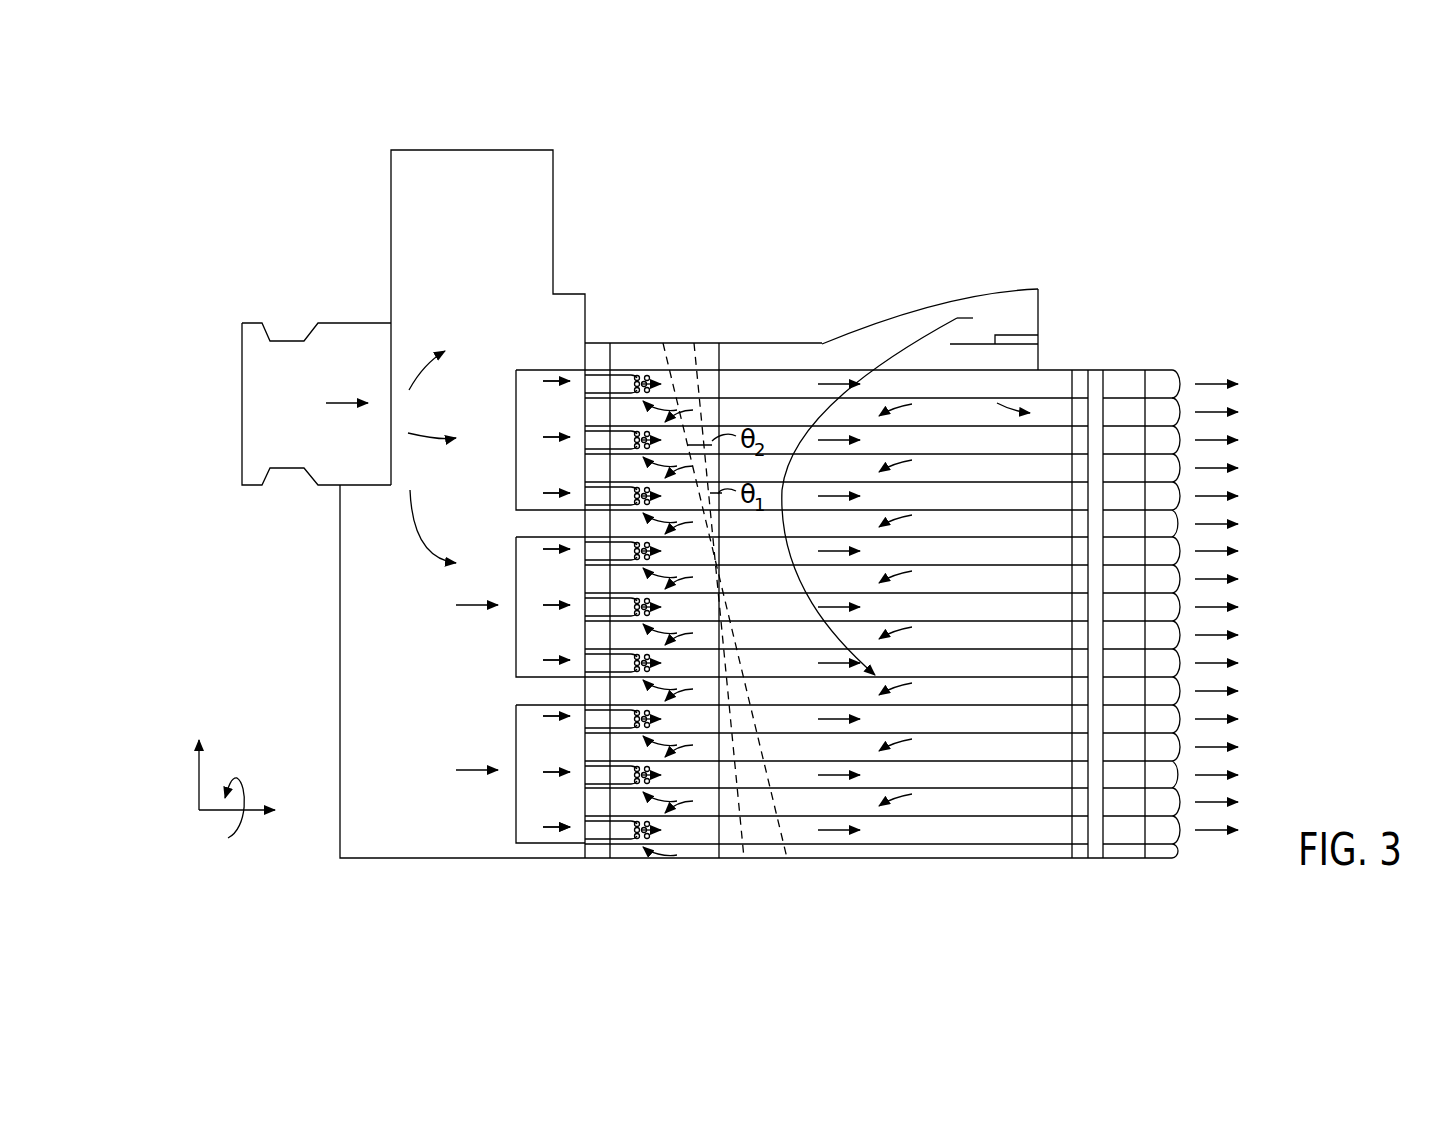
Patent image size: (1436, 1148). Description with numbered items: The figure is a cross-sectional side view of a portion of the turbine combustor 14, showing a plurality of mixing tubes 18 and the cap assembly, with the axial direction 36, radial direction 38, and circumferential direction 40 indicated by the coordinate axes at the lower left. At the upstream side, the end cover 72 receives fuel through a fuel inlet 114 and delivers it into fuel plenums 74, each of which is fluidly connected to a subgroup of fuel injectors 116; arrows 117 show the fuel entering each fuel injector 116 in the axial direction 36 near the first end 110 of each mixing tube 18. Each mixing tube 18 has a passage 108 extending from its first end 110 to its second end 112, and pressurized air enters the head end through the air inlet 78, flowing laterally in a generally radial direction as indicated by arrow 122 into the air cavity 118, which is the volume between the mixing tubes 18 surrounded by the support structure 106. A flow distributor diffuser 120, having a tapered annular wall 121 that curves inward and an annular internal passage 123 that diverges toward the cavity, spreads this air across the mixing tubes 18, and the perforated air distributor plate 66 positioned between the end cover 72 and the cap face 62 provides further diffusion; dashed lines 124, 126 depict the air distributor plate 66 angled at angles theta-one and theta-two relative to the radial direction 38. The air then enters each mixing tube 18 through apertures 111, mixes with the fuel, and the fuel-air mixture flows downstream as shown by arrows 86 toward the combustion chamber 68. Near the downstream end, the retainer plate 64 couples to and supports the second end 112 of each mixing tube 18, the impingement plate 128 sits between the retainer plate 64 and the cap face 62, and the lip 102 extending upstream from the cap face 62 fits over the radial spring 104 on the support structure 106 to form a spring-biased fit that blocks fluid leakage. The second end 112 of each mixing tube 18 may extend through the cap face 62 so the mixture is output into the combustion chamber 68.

The turbine combustor 14 is at (1165, 177).
The end cover 72 is at (474, 167).
The fuel inlet 114 is at (252, 367).
The fuel plenum 74 is at (516, 368).
The arrows 117 is at (553, 436).
The first end 110 is at (574, 360).
The air cavity 118 is at (845, 362).
The fuel injector 116 is at (622, 382).
The apertures 111 is at (643, 374).
The distributor plate 66 is at (713, 770).
The support structure 106 is at (703, 343).
The dashed line 124 is at (738, 800).
The dashed line 126 is at (769, 828).
The mixing tube 18 is at (757, 381).
The arrows 86 is at (836, 872).
The passage 108 is at (928, 395).
The air inlet 78 is at (903, 332).
The flow distributor diffuser 120 is at (922, 300).
The tapered annular wall 121 is at (1003, 290).
The arrow 122 is at (948, 320).
The annular internal passage 123 is at (878, 330).
The retainer plate 64 is at (1072, 397).
The impingement plate 128 is at (1097, 383).
The radial spring 104 is at (1145, 368).
The cap face 62 is at (1150, 385).
The lip 102 is at (1147, 368).
The combustion chamber 68 is at (1250, 600).
The second end 112 is at (1195, 372).
The radial direction 38 is at (196, 779).
The axial direction 36 is at (232, 816).
The circumferential direction 40 is at (246, 789).